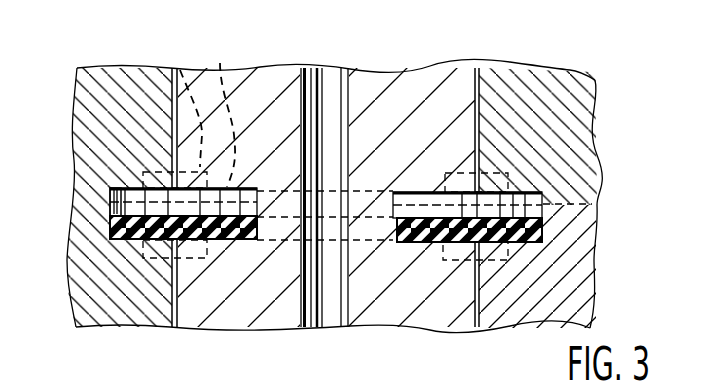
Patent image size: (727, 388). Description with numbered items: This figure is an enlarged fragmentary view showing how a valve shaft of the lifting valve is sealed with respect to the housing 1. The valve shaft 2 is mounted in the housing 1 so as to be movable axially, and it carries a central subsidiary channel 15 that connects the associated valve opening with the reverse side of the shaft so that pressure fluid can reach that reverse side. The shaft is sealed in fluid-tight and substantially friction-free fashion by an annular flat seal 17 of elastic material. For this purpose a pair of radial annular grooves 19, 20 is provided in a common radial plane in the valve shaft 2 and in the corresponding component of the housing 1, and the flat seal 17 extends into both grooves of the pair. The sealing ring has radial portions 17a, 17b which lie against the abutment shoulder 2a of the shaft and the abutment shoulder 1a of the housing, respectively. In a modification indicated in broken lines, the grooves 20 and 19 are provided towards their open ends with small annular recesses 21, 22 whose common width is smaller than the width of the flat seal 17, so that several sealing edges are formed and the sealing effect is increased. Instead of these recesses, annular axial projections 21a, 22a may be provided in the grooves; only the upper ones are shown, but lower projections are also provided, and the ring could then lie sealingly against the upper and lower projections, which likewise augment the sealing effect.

The housing 1 is at (590, 201).
The abutment shoulder 1a is at (528, 242).
The valve shaft 2 is at (376, 88).
The abutment shoulder 2a is at (412, 242).
The central subsidiary channel 15 is at (322, 84).
The annular flat seal 17 is at (530, 252).
The radial portion of flat sealing ring 17a is at (420, 192).
The radial portion of flat sealing ring 17b is at (543, 200).
The radial annular groove 19 is at (228, 212).
The radial annular groove 20 is at (110, 208).
The annular recess 21 is at (125, 154).
The annular axial projection 21a is at (113, 176).
The annular recess 22 is at (176, 70).
The annular axial projection 22a is at (215, 106).